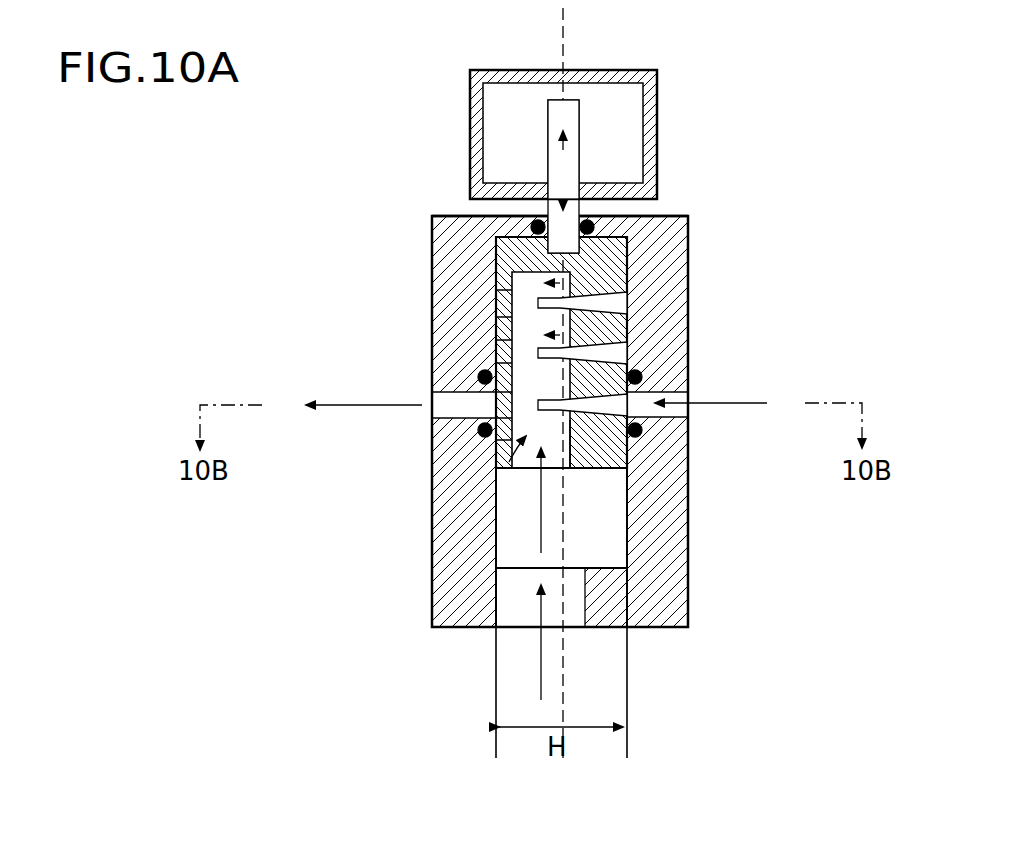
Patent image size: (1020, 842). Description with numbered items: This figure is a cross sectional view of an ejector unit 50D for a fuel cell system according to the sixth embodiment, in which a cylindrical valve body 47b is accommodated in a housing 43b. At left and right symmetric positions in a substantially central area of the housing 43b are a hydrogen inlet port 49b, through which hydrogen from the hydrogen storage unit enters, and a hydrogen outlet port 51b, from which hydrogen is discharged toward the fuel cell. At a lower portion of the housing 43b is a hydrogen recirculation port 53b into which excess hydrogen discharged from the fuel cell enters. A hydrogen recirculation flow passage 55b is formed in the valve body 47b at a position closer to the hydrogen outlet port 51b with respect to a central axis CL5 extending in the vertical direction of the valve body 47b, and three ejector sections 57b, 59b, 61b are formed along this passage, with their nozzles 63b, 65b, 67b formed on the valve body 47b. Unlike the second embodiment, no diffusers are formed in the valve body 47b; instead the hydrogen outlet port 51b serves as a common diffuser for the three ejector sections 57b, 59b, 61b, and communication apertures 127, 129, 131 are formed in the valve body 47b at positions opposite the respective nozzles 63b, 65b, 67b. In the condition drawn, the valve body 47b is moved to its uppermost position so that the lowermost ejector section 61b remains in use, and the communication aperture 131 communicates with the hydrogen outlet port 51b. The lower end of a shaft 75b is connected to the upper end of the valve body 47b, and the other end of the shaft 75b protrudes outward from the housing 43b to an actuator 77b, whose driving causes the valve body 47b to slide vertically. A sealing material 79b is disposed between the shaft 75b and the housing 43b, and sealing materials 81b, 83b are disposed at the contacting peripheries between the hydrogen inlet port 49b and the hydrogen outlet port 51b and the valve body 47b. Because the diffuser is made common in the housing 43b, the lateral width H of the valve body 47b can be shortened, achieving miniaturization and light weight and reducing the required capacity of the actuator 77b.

The valve device 50D is at (760, 102).
The housing 43b is at (672, 603).
The valve body 47b is at (688, 218).
The hydrogen inlet port 49b is at (688, 400).
The hydrogen outlet port 51b is at (436, 393).
The hydrogen recirculation port 53b is at (575, 632).
The hydrogen recirculation flow passage 55b is at (535, 424).
The ejector section 57b is at (570, 396).
The ejector section 59b is at (600, 346).
The ejector section 61b is at (497, 463).
The nozzle 63b is at (600, 299).
The nozzle 65b is at (612, 360).
The nozzle 67b is at (627, 450).
The shaft 75b is at (580, 111).
The actuator 77b is at (497, 70).
The sealing material 79b is at (537, 219).
The sealing material 81b is at (642, 431).
The sealing material 83b is at (481, 434).
The communication aperture 127 is at (497, 297).
The communication aperture 129 is at (497, 344).
The communication aperture 131 is at (498, 422).
The central axis CL5 is at (566, 30).